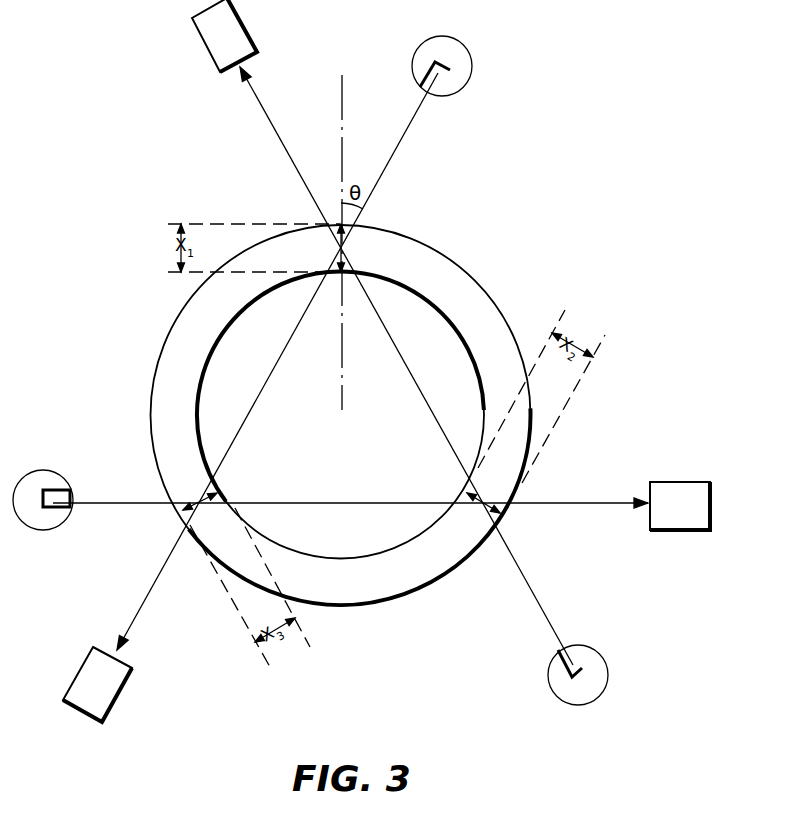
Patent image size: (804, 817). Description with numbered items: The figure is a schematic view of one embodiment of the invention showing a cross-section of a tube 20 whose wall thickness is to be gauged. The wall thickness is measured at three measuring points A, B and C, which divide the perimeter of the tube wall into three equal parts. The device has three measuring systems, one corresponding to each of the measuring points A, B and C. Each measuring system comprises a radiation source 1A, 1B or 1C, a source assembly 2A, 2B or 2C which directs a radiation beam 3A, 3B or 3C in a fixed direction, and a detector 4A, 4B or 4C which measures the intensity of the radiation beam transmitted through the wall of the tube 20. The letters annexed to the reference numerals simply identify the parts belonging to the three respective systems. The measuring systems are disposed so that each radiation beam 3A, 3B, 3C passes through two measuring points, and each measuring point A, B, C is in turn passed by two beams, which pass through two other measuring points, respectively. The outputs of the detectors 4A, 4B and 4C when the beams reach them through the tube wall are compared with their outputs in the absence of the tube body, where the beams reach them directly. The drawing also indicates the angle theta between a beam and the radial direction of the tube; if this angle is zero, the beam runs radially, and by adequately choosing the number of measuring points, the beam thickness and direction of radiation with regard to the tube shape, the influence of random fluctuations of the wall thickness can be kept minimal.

The radiation source 1A is at (446, 84).
The source assembly 2A is at (458, 63).
The radiation beam 3A is at (380, 178).
The detector 4A is at (110, 683).
The radiation source 1B is at (566, 669).
The source assembly 2B is at (592, 680).
The radiation beam 3B is at (524, 575).
The detector 4B is at (216, 50).
The radiation source 1C is at (60, 490).
The source assembly 2C is at (33, 513).
The radiation beam 3C is at (100, 505).
The detector 4C is at (670, 492).
The tube 20 is at (357, 592).
The measuring point A is at (347, 246).
The measuring point B is at (480, 513).
The measuring point C is at (208, 497).